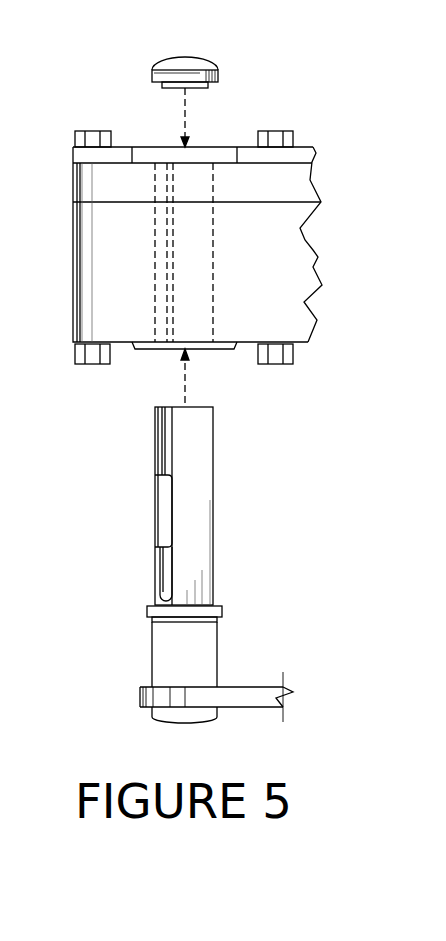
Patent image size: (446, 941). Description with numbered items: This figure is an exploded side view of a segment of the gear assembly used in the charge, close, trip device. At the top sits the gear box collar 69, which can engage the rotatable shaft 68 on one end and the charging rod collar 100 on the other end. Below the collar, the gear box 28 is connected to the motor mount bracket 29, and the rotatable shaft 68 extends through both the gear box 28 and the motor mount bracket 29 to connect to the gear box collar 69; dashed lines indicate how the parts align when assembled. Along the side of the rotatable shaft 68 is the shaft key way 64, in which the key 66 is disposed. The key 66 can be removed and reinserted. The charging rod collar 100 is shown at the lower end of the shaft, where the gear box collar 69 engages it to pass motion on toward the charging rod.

The gear box collar 69 is at (152, 76).
The motor mount bracket 29 is at (73, 155).
The gear box 28 is at (95, 253).
The rotatable shaft 68 is at (187, 514).
The key 66 is at (160, 510).
The shaft key way 64 is at (168, 568).
The charging rod collar 100 is at (205, 659).